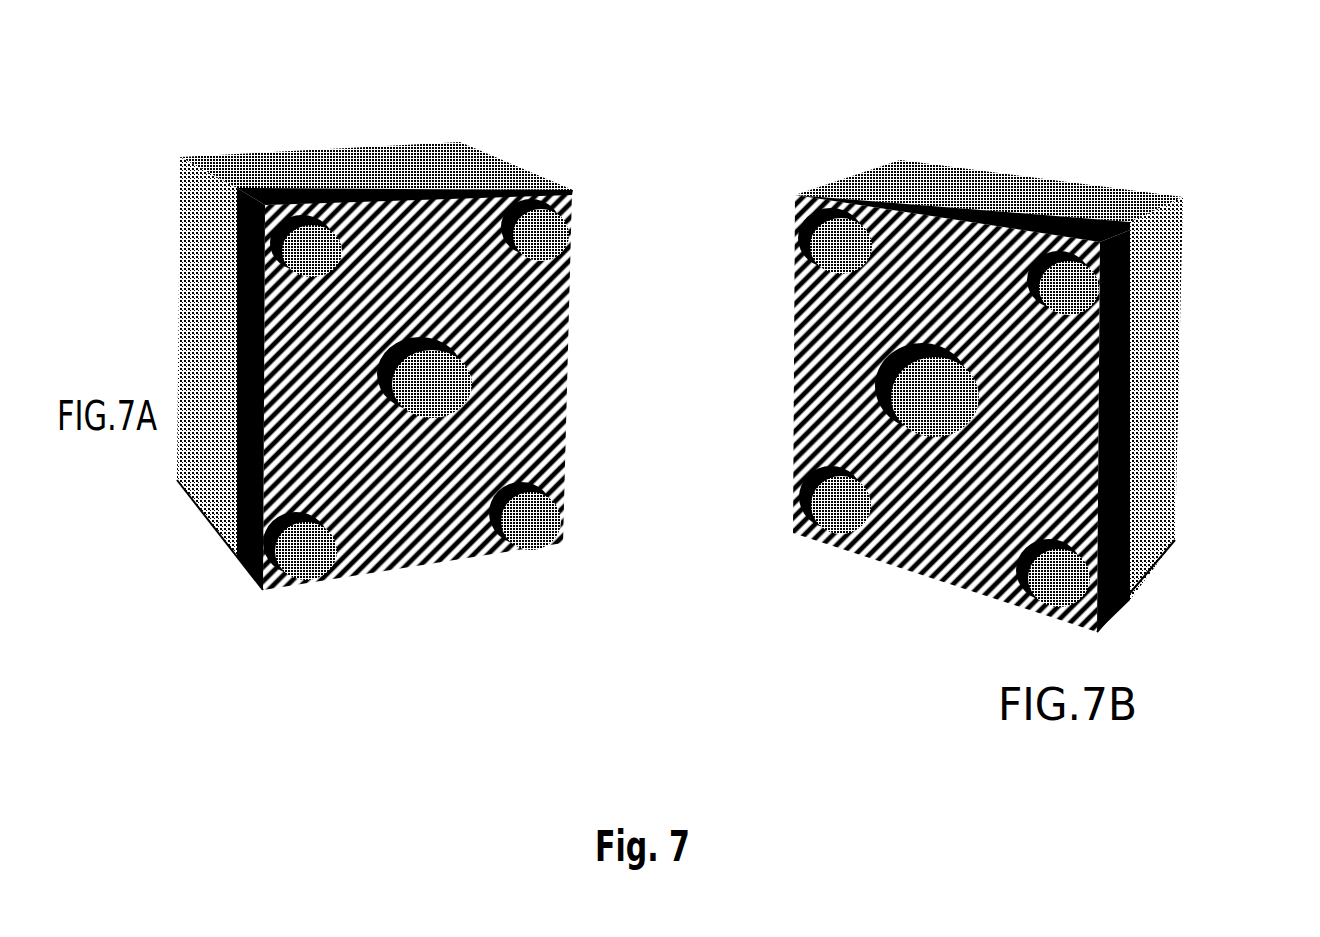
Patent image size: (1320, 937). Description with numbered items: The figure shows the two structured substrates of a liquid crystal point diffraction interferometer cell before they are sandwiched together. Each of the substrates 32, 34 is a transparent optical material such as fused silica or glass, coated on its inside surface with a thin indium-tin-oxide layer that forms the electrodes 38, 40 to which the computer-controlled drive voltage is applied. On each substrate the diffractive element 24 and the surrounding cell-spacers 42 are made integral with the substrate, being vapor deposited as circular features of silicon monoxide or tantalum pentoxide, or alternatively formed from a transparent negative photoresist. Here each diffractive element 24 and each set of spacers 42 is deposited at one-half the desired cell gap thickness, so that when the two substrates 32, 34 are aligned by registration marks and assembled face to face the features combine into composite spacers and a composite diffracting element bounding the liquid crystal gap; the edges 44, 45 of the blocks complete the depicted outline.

In FIG. 7A, the diffractive element 24 is at (430, 385).
In FIG. 7B, the diffractive element 24 is at (890, 395).
In FIG. 7A, the substrate 32 is at (213, 155).
In FIG. 7B, the substrate 34 is at (1108, 188).
In FIG. 7A, the electrode 38 is at (178, 282).
In FIG. 7B, the electrode 40 is at (1135, 383).
In FIG. 7A, the cell-spacers 42 is at (416, 365).
In FIG. 7B, the cell-spacers 42 is at (948, 402).
In FIG. 7B, the bottom edge 44 is at (1047, 445).
In FIG. 7A, the bottom edge 45 is at (207, 510).